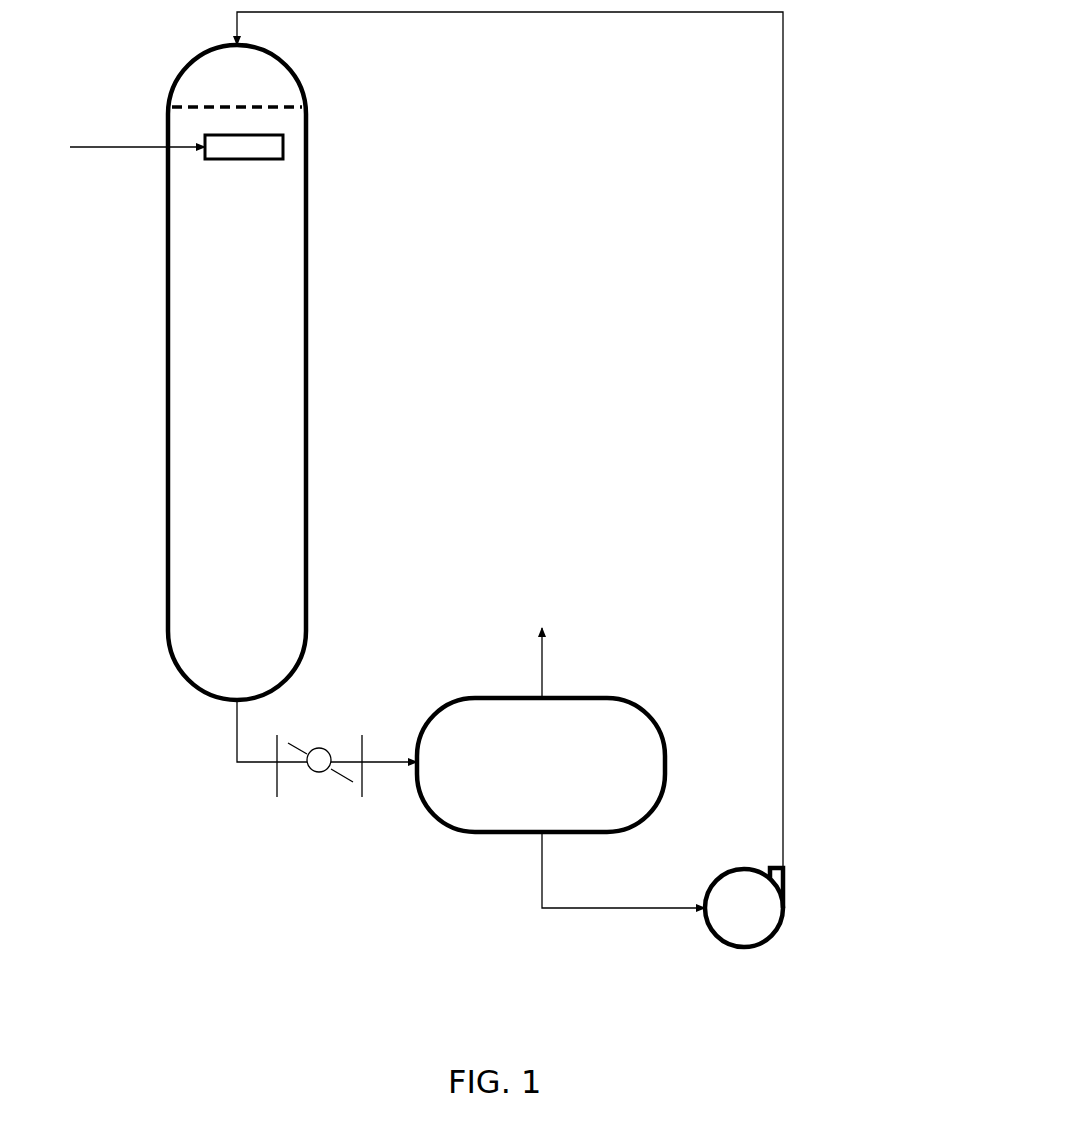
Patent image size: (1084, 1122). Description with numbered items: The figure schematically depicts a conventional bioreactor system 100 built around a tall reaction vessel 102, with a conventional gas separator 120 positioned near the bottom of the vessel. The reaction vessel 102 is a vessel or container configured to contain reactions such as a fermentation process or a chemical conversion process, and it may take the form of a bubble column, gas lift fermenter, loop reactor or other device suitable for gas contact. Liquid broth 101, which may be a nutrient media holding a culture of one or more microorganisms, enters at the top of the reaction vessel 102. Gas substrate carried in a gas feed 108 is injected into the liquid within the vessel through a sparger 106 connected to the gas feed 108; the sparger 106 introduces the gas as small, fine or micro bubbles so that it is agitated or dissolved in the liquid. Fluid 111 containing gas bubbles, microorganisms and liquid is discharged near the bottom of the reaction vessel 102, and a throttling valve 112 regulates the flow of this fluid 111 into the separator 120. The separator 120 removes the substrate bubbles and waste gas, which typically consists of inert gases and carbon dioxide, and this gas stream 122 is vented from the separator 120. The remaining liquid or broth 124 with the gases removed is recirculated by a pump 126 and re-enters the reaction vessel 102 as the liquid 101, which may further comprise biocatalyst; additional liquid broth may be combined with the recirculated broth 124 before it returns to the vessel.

The bioreactor system 100 is at (833, 183).
The liquid broth 101 is at (767, 392).
The reaction vessel 102 is at (163, 373).
The sparger 106 is at (283, 147).
The gas feed 108 is at (122, 142).
The fluid 111 is at (228, 753).
The throttling valve 112 is at (308, 790).
The gas separator 120 is at (658, 713).
The gas stream 122 is at (533, 670).
The liquid broth 124 is at (535, 875).
The pump 126 is at (787, 912).